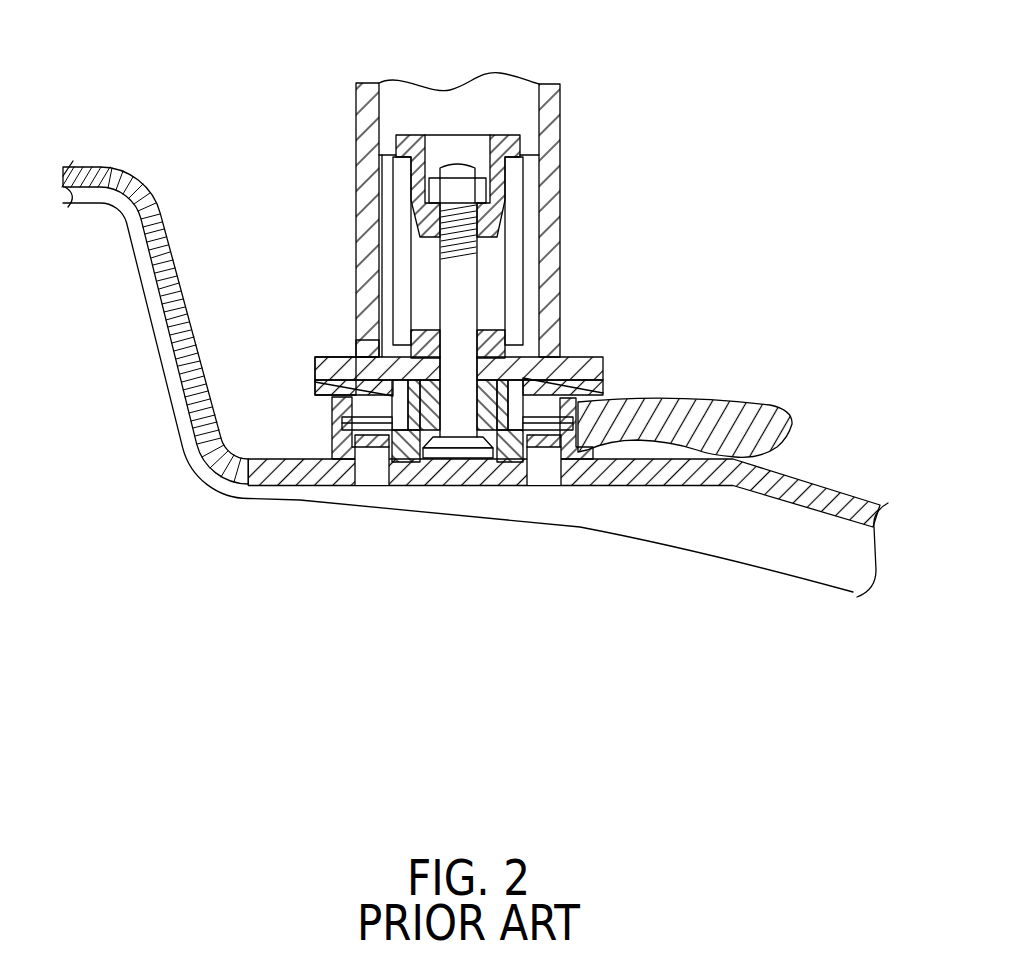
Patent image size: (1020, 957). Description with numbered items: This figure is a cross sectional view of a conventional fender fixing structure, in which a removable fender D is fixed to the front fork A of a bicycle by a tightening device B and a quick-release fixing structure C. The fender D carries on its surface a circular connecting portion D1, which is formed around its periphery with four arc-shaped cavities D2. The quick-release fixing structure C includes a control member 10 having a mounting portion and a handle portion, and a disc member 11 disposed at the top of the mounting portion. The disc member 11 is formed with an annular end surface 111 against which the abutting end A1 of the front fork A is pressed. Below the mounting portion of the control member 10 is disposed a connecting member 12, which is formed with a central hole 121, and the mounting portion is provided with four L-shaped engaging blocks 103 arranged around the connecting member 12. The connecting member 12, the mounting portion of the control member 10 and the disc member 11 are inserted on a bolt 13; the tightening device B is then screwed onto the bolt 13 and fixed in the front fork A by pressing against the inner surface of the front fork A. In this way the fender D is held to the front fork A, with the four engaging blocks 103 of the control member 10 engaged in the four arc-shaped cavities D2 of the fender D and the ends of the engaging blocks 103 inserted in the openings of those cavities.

The front fork A is at (355, 140).
The abutting end A1 is at (341, 357).
The tightening device B is at (500, 133).
The quick-release fixing structure C is at (615, 384).
The removable fender D is at (818, 485).
The circular connecting portion D1 is at (324, 452).
The arc-shaped cavities D2 is at (551, 460).
The control member 10 is at (761, 397).
The disc member 11 is at (586, 377).
The annular end surface 111 is at (315, 361).
The connecting member 12 is at (404, 463).
The central hole 121 is at (434, 454).
The bolt 13 is at (453, 287).
The L-shaped engaging blocks 103 is at (367, 447).